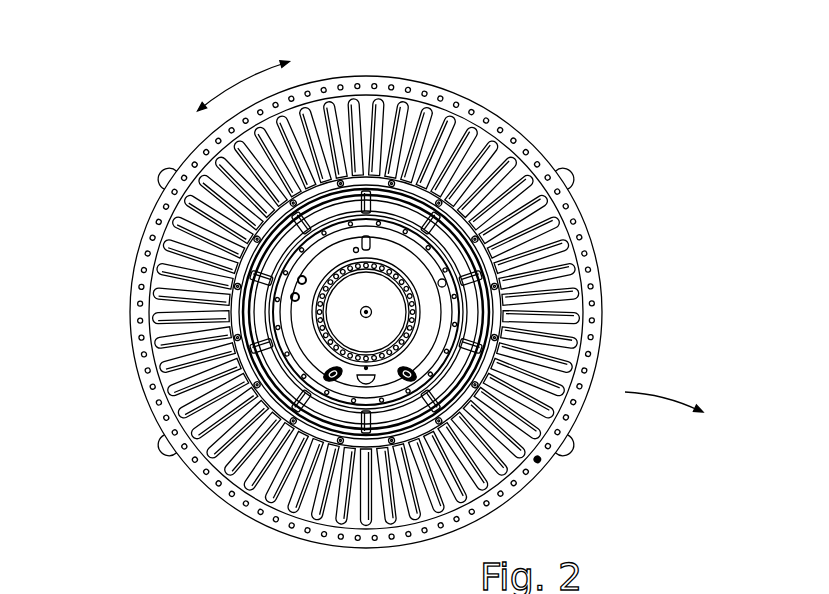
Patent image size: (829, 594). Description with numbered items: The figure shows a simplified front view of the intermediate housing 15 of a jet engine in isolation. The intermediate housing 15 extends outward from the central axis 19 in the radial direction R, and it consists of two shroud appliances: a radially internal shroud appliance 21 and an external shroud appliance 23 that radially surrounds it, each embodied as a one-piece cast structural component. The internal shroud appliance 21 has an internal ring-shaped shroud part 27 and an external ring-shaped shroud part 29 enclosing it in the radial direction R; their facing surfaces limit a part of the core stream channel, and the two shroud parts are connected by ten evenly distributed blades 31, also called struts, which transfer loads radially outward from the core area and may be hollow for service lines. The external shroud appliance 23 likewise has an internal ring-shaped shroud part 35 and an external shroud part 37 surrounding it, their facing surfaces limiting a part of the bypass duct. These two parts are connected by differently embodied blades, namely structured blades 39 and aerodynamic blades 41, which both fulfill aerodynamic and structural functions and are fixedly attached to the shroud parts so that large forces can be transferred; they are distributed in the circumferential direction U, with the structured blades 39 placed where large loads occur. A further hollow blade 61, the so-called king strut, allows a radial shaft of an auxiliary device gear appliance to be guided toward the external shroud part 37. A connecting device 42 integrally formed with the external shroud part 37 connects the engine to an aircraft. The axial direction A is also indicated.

The intermediate housing 15 is at (143, 81).
The central axis 19 is at (368, 312).
The internal shroud appliance 21 is at (434, 150).
The external shroud appliance 23 is at (443, 83).
The internal ring-shaped shroud part 27 is at (366, 312).
The external ring-shaped shroud part 29 is at (290, 393).
The blades 31 is at (540, 460).
The internal ring-shaped shroud part 35 is at (580, 250).
The external shroud part 37 is at (384, 80).
The structured blades 39 is at (185, 427).
The aerodynamic blades 41 is at (197, 447).
The connecting device 42 is at (566, 167).
The blade 61 is at (363, 507).
The circumferential direction U is at (237, 75).
The axial direction A is at (153, 403).
The radial direction R is at (665, 374).